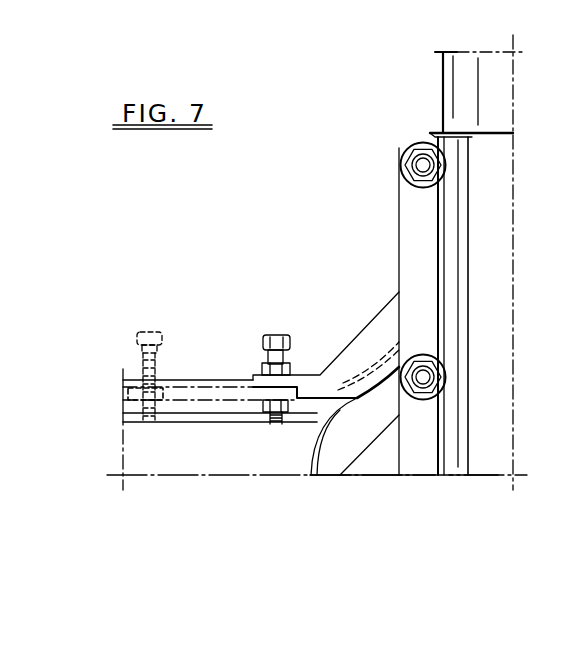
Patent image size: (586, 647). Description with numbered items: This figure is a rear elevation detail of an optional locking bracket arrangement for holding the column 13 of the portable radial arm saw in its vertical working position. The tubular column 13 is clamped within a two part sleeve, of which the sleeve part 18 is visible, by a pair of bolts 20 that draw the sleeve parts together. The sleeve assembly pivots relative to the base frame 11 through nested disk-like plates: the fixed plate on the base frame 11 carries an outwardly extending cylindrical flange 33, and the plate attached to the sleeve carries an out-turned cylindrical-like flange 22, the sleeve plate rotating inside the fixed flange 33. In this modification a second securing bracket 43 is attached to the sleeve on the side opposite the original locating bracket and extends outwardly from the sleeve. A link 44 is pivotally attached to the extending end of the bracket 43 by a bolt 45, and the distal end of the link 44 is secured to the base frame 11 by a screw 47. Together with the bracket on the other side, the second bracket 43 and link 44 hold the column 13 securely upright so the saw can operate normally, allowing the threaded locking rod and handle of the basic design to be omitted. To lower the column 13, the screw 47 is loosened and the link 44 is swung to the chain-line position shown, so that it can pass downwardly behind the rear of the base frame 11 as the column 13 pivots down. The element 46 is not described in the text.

The base frame 11 is at (138, 450).
The column 13 is at (455, 79).
The sleeve part 18 is at (413, 203).
The bolts 20 is at (423, 158).
The cylindrical flange 22 is at (353, 437).
The cylindrical flange 33 is at (310, 455).
The second securing bracket 43 is at (373, 337).
The link 44 is at (190, 395).
The bolt 45 is at (263, 372).
The clamp member 46 is at (123, 393).
The screw 47 is at (275, 335).